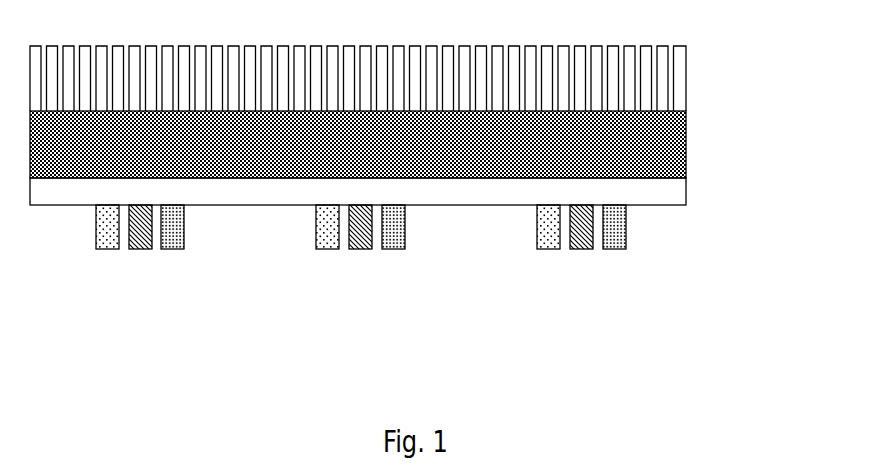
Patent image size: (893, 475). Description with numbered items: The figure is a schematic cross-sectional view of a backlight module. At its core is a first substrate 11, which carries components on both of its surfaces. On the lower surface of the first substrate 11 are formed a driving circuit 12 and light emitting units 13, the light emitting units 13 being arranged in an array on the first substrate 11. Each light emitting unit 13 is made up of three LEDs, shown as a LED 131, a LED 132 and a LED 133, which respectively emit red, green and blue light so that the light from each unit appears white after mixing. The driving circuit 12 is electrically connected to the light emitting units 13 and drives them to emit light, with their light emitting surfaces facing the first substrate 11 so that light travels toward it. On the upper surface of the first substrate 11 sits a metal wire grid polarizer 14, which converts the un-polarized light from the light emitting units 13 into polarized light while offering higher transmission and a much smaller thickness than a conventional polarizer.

The first substrate 11 is at (686, 142).
The driving circuit 12 is at (662, 194).
The light emitting unit 13 is at (361, 301).
The LED 131 is at (322, 249).
The LED 132 is at (358, 249).
The LED 133 is at (328, 328).
The metal wire grid polarizer 14 is at (686, 79).